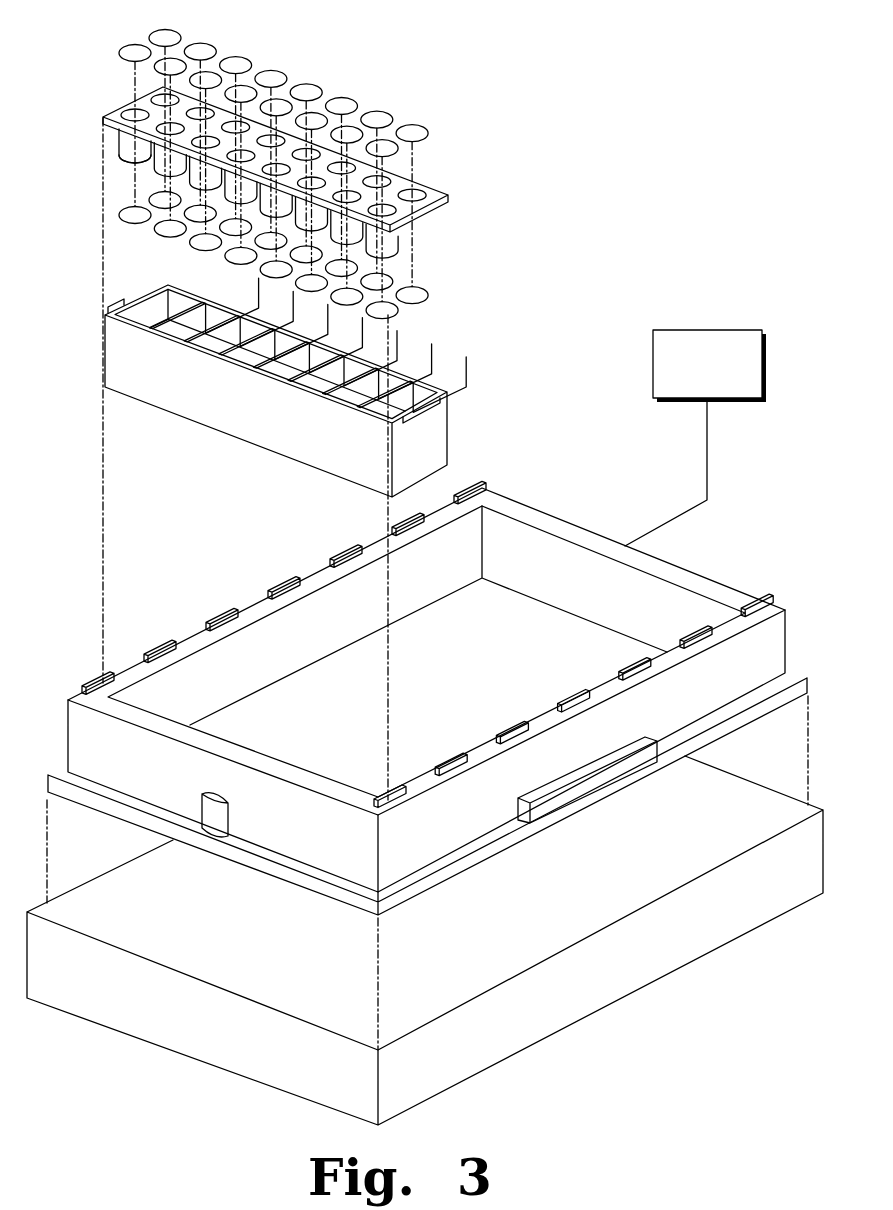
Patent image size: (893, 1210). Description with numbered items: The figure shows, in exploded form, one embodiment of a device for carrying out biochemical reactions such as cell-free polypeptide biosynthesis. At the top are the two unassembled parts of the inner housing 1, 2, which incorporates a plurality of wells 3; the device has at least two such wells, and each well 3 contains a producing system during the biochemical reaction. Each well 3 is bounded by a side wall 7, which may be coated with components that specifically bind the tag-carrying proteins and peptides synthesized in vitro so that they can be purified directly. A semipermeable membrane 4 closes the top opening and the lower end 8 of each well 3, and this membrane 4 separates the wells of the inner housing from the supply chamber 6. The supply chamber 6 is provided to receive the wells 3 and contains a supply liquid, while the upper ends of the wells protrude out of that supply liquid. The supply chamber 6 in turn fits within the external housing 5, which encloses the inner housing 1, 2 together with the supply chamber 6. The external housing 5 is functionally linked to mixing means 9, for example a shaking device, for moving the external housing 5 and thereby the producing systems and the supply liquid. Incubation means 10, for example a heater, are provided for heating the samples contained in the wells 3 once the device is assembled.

The inner housing 1 is at (284, 459).
The inner housing 2 is at (286, 162).
The well 3 is at (118, 142).
The membrane 4 is at (121, 51).
The external housing 5 is at (542, 512).
The supply chamber 6 is at (426, 396).
The side wall 7 is at (400, 208).
The lower end of the well 8 is at (118, 168).
The mixing means 9 is at (605, 995).
The incubation means 10 is at (707, 330).